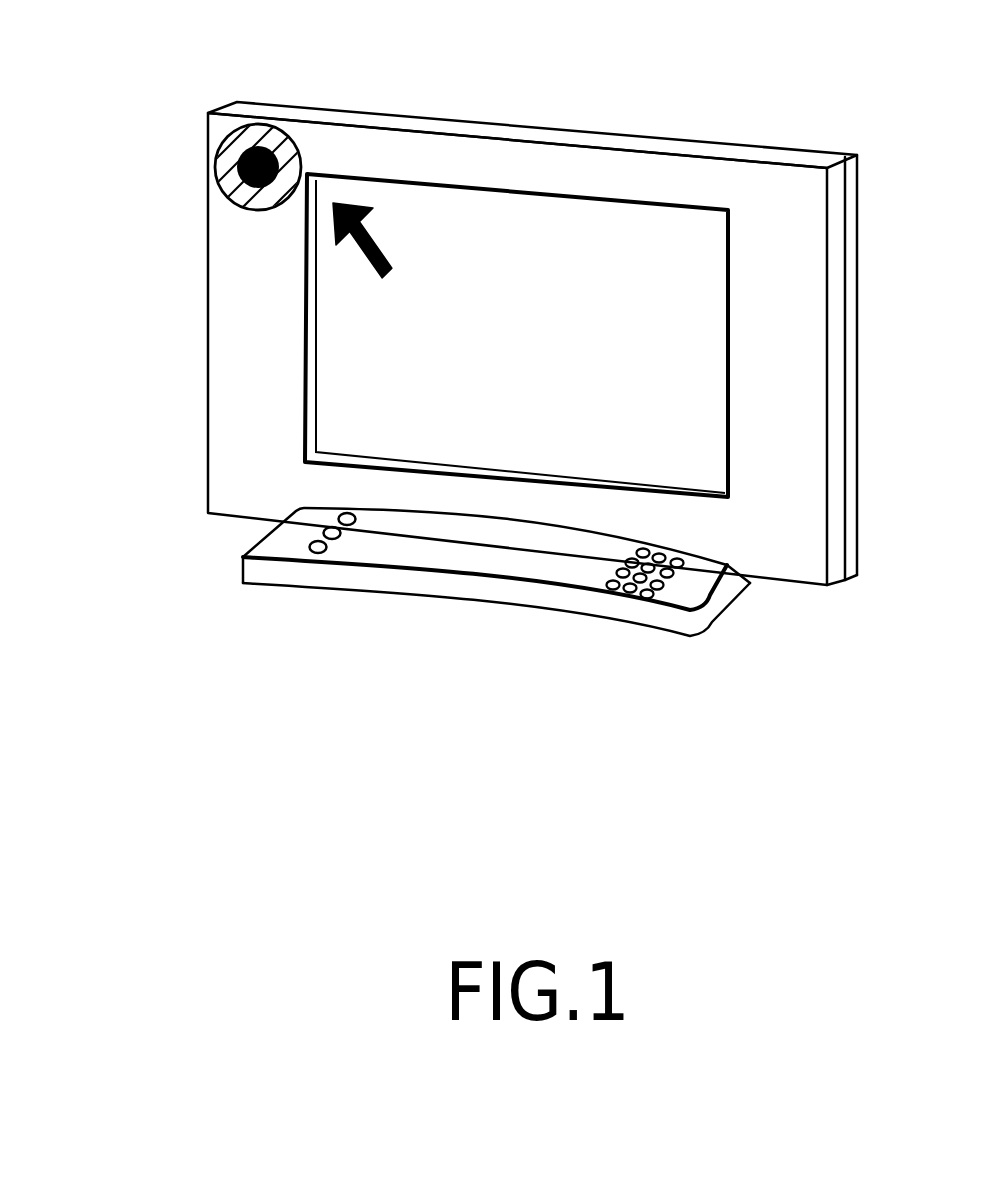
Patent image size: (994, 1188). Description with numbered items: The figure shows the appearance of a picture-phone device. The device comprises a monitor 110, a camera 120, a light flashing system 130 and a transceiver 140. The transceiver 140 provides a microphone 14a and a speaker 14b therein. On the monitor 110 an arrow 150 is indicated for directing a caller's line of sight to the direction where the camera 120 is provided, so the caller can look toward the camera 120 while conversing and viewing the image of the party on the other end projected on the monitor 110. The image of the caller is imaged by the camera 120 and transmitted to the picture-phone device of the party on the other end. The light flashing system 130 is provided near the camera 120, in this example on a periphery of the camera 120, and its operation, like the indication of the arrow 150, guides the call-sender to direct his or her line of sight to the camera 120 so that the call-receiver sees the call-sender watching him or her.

The monitor 110 is at (652, 223).
The camera 120 is at (242, 182).
The light flashing system 130 is at (275, 135).
The transceiver 140 is at (553, 603).
The microphone 14a is at (321, 553).
The speaker 14b is at (673, 577).
The arrow 150 is at (376, 239).